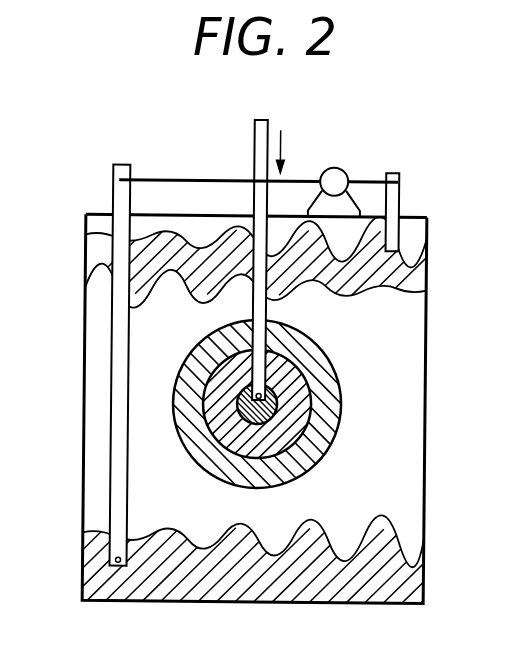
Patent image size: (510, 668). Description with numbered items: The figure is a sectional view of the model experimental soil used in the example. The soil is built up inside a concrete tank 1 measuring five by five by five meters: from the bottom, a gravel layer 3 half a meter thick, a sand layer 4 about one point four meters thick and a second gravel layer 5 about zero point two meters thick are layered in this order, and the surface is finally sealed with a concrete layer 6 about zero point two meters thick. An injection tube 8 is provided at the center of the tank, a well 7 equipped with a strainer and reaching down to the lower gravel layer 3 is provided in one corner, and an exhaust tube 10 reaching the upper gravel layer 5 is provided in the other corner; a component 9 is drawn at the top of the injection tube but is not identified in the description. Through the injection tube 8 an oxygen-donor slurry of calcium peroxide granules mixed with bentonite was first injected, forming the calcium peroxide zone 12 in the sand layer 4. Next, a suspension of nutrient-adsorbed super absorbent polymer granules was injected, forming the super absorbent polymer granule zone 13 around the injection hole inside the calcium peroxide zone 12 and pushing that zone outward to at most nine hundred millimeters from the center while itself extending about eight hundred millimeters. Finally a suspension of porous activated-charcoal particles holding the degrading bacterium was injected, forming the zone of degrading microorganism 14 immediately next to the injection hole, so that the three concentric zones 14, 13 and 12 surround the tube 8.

The concrete tank 1 is at (257, 604).
The gravel layer 3 is at (95, 572).
The sand layer 4 is at (105, 423).
The gravel layer 5 is at (93, 260).
The concrete layer 6 is at (105, 222).
The well 7 is at (121, 166).
The injection tube 8 is at (258, 120).
The drive wheel 9 is at (338, 167).
The exhaust tube 10 is at (390, 172).
The calcium peroxide zone 12 is at (318, 412).
The super absorbent polymer granule zone 13 is at (295, 389).
The zone of degrading microorganism 14 is at (277, 395).